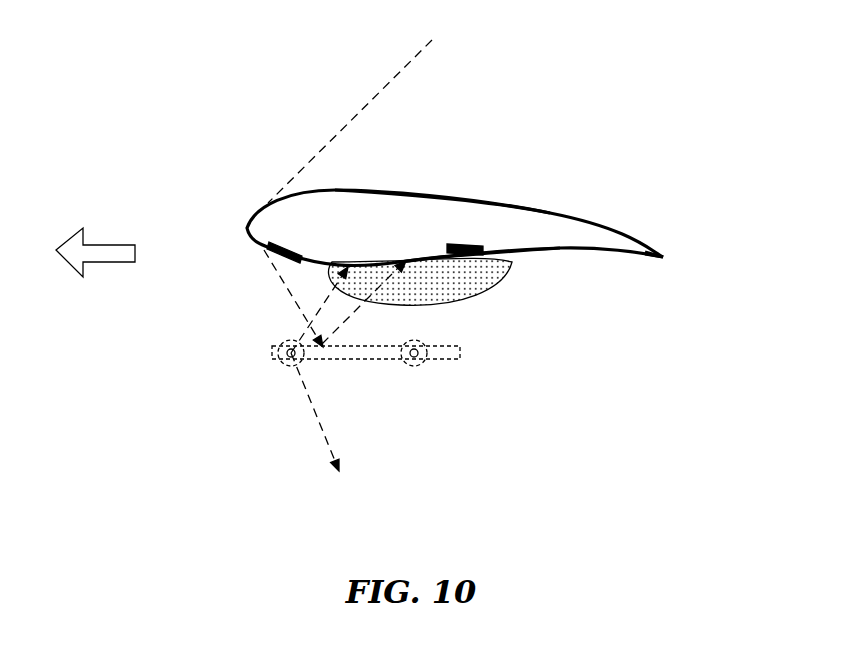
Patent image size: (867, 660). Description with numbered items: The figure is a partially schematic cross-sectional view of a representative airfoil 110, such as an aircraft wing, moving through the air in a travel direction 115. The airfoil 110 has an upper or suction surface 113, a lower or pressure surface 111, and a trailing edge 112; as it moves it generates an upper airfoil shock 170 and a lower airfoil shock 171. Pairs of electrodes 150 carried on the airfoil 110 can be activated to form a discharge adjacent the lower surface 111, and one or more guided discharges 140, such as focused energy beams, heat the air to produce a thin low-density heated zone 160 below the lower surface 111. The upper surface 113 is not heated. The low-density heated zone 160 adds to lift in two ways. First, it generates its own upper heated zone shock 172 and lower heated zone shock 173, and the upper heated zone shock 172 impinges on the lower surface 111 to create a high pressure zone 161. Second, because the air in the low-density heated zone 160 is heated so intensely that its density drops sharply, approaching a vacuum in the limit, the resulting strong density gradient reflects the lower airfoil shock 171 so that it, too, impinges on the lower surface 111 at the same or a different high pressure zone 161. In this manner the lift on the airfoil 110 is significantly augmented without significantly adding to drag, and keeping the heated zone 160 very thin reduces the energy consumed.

The airfoil 110 is at (380, 213).
The lower surface 111 is at (592, 252).
The trailing edge 112 is at (665, 258).
The upper surface 113 is at (432, 190).
The travel direction 115 is at (103, 243).
The guided discharge 140 is at (302, 379).
The electrodes 150 is at (298, 250).
The low-density heated zone 160 is at (447, 358).
The high pressure zone 161 is at (505, 290).
The upper airfoil shock 170 is at (391, 79).
The lower airfoil shock 171 is at (275, 270).
The upper heated zone shock 172 is at (290, 332).
The lower heated zone shock 173 is at (318, 442).